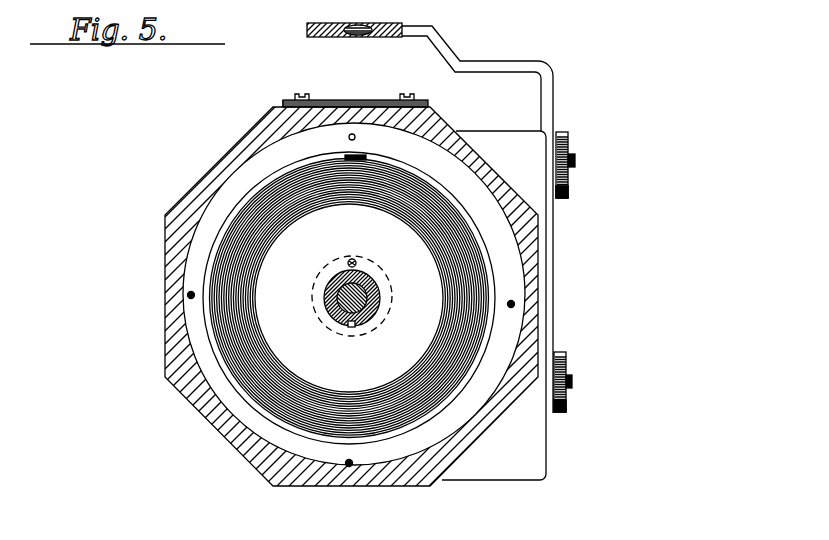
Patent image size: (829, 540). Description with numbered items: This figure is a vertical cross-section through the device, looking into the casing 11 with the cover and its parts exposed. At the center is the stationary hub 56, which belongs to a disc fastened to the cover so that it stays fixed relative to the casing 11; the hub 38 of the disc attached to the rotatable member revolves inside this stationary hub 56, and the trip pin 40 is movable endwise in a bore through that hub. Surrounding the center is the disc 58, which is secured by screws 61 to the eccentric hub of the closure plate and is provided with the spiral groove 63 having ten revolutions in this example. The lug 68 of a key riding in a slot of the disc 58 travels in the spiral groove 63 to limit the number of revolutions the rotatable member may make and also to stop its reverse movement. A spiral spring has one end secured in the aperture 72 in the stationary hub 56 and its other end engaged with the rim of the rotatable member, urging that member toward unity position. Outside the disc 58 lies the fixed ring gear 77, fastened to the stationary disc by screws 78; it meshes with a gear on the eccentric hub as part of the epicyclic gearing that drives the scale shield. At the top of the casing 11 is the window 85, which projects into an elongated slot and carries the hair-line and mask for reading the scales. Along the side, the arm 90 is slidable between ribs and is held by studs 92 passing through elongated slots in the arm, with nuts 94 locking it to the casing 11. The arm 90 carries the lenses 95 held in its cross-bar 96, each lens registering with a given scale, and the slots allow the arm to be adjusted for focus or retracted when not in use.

The casing 11 is at (205, 395).
The hub 38 is at (372, 318).
The trip pin 40 is at (345, 307).
The hub 56 is at (374, 293).
The disc 58 is at (424, 176).
The screws 61 is at (358, 262).
The spiral groove 63 is at (449, 330).
The lug 68 is at (360, 158).
The aperture 72 is at (351, 327).
The fixed ring gear 77 is at (402, 462).
The screws 78 is at (353, 463).
The window 85 is at (414, 103).
The arm 90 is at (548, 104).
The studs 92 is at (589, 384).
The nuts 94 is at (577, 428).
The lenses 95 is at (356, 37).
The cross-bar 96 is at (316, 38).